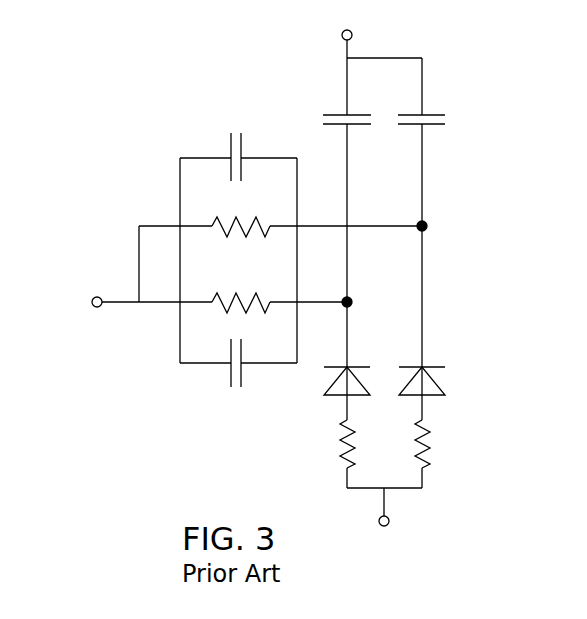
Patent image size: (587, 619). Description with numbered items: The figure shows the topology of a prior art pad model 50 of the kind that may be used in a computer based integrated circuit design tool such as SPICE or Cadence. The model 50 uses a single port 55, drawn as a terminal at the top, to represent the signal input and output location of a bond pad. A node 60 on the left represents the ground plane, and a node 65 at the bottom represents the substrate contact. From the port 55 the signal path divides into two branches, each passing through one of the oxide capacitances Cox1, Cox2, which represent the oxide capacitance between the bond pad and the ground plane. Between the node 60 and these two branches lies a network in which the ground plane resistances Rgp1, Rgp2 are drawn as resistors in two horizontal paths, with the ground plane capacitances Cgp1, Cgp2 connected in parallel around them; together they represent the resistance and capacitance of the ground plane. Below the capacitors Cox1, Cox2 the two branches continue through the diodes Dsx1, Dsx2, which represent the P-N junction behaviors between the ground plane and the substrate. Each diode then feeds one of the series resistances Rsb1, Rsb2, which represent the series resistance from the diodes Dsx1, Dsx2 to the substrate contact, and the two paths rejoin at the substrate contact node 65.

The pad model 50 is at (102, 77).
The port 55 is at (353, 32).
The node 60 is at (94, 298).
The node 65 is at (391, 516).
The ground plane capacitance Cgp1 is at (218, 146).
The ground plane capacitance Cgp2 is at (225, 376).
The ground plane resistance Rgp1 is at (232, 236).
The ground plane resistance Rgp2 is at (232, 291).
The oxide capacitance Cox1 is at (328, 107).
The oxide capacitance Cox2 is at (438, 107).
The diode Dsx1 is at (326, 384).
The diode Dsx2 is at (446, 384).
The series resistance Rsb1 is at (321, 444).
The series resistance Rsb2 is at (447, 444).